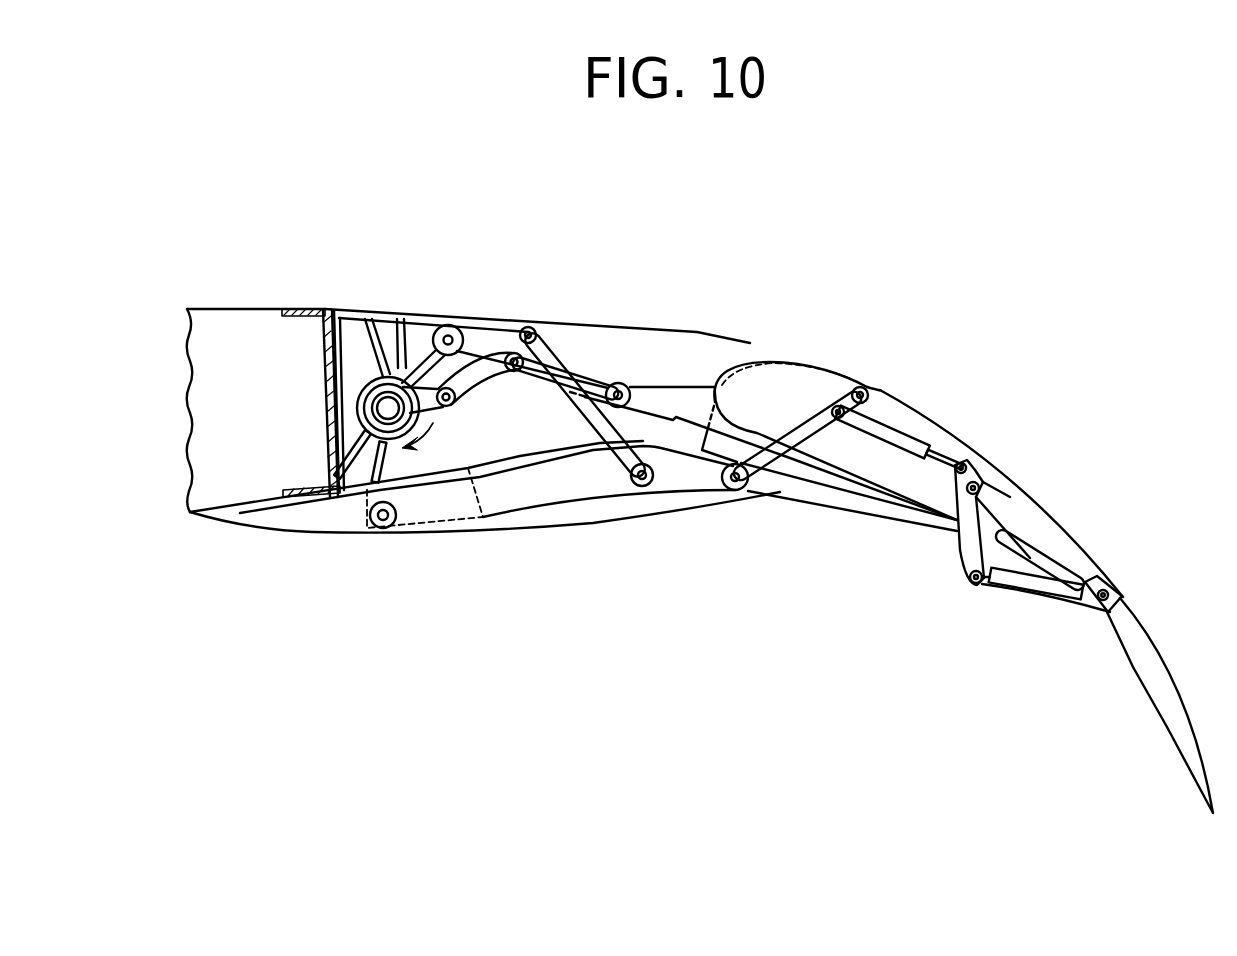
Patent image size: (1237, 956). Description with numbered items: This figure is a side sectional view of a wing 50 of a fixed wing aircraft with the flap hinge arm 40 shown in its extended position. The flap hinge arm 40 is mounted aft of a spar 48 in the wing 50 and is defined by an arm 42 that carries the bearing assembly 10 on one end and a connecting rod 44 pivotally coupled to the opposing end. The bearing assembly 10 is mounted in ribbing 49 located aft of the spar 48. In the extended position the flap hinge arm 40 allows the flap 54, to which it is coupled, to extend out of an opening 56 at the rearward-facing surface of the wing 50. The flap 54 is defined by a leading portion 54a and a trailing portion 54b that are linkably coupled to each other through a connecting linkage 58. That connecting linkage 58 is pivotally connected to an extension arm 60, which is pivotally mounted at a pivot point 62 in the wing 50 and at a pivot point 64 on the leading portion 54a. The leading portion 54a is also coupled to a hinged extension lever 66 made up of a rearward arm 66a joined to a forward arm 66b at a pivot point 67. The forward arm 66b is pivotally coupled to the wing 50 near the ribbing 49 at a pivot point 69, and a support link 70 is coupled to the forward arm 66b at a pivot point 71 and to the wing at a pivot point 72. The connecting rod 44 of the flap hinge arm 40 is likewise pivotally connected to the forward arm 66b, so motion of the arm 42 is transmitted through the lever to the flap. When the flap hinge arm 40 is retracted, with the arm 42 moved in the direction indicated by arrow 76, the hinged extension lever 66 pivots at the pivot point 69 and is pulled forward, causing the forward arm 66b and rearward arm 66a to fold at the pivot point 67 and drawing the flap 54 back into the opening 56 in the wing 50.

The bearing assembly 10 is at (340, 378).
The flap hinge arm 40 is at (414, 368).
The arm 42 is at (438, 408).
The connecting rod 44 is at (483, 380).
The spar 48 is at (323, 402).
The ribbing 49 is at (388, 330).
The wing 50 is at (255, 309).
The flap 54 is at (995, 442).
The leading portion 54a is at (897, 395).
The trailing portion 54b is at (1155, 633).
The opening 56 is at (742, 352).
The connecting linkage 58 is at (948, 552).
The extension arm 60 is at (827, 445).
The pivot point 62 is at (736, 492).
The pivot point 64 is at (866, 383).
The hinged extension lever 66 is at (658, 372).
The rearward arm 66a is at (690, 387).
The forward arm 66b is at (500, 333).
The pivot point 67 is at (612, 382).
The pivot point 69 is at (458, 327).
The support link 70 is at (587, 423).
The pivot point 71 is at (537, 332).
The pivot point 72 is at (648, 490).
The arrow 76 is at (415, 465).